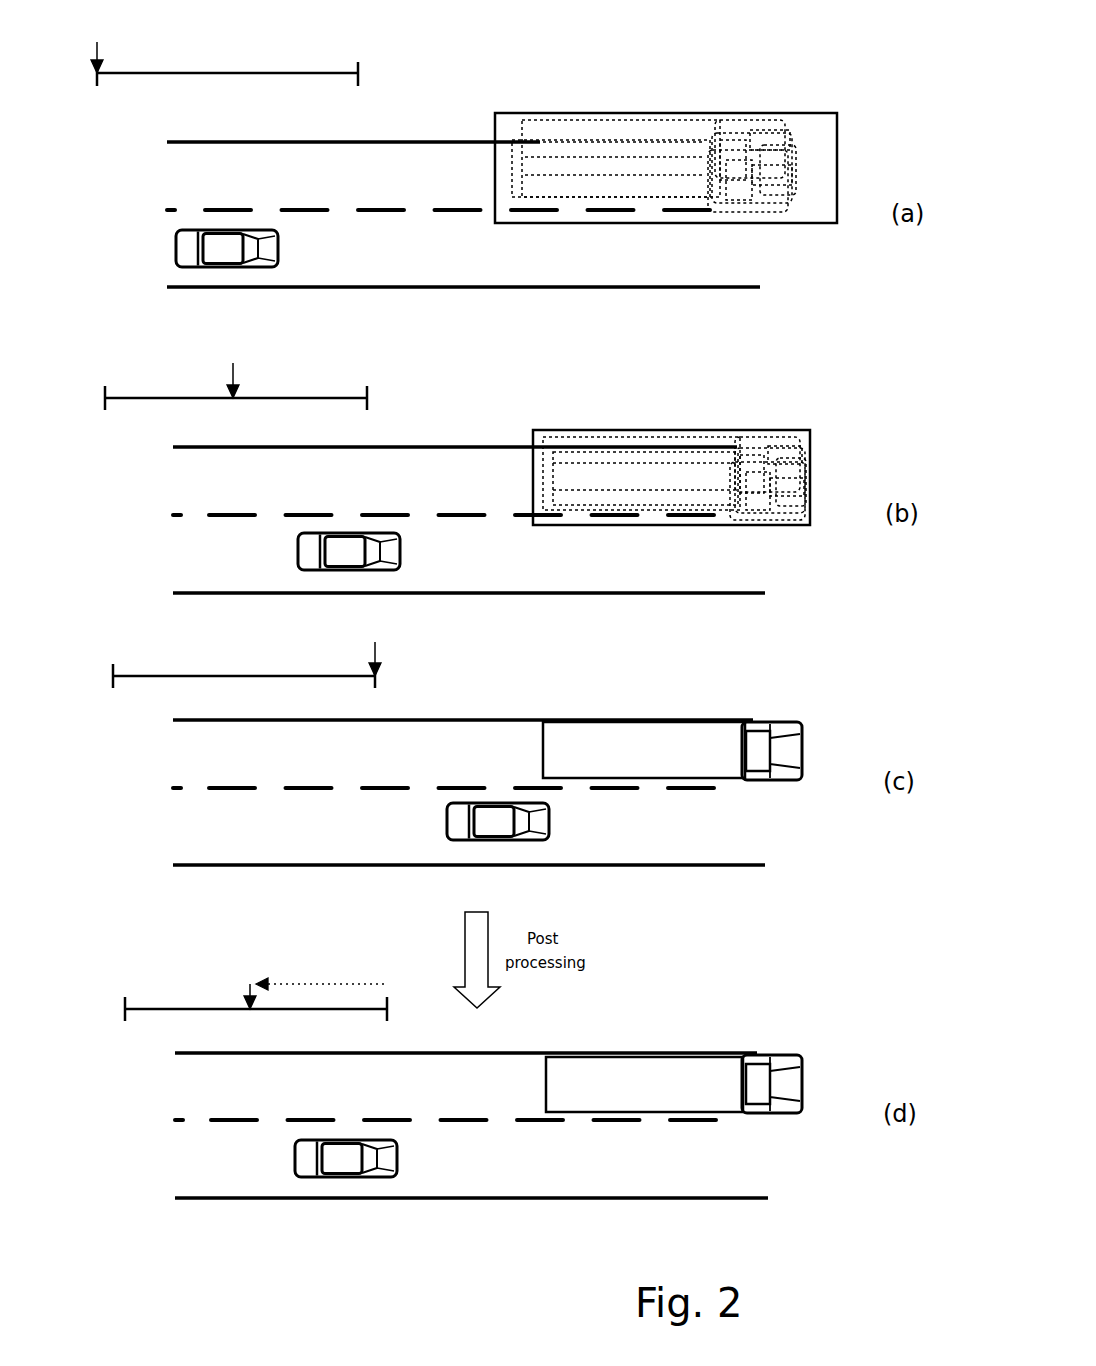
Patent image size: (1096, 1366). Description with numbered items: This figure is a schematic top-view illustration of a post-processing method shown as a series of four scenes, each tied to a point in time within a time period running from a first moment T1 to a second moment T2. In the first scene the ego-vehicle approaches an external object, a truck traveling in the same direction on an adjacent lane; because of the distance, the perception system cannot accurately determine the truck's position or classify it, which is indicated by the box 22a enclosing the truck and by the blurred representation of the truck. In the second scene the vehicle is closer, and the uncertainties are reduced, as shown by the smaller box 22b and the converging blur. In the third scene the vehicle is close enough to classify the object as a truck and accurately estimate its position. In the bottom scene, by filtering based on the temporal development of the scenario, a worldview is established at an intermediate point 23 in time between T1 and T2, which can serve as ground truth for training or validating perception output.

The box 22a is at (710, 113).
The box 22b is at (705, 430).
The intermediate point in time 23 is at (254, 982).